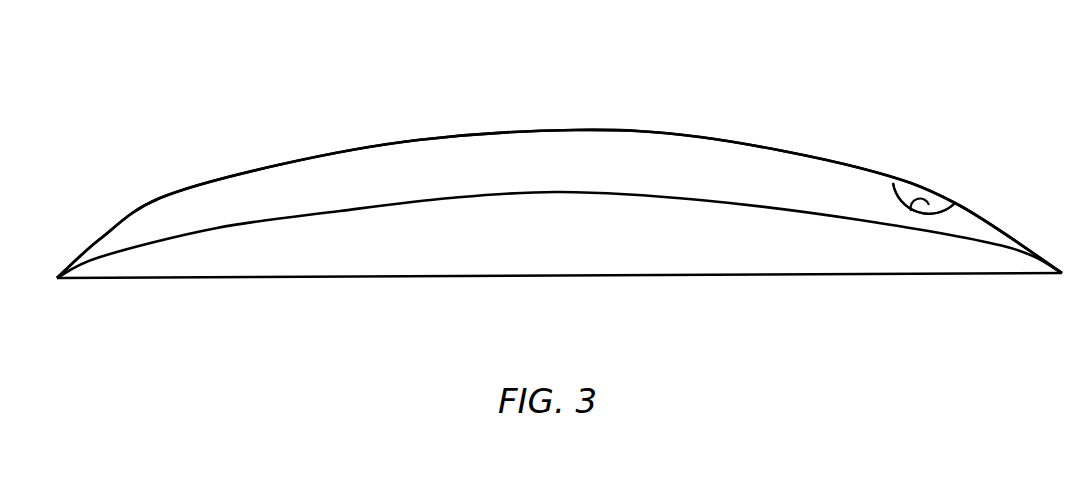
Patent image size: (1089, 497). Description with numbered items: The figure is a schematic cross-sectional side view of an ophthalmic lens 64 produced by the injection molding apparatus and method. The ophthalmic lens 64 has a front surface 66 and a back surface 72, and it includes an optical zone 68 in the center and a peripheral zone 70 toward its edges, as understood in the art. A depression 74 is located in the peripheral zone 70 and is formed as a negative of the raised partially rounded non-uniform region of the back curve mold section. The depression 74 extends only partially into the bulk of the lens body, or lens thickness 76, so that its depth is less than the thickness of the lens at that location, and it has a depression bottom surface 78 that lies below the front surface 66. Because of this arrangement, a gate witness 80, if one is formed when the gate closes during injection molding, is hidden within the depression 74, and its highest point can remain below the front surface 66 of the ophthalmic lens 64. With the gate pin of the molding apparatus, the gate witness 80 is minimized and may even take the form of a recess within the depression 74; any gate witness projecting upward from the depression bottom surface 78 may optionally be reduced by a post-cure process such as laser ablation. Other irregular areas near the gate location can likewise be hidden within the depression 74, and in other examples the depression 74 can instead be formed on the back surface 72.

The ophthalmic lens 64 is at (497, 121).
The front surface 66 is at (278, 165).
The optical zone 68 is at (418, 140).
The peripheral zone 70 is at (983, 213).
The back surface 72 is at (217, 230).
The depression 74 is at (907, 181).
The lens thickness 76 is at (697, 170).
The depression bottom surface 78 is at (918, 212).
The gate witness 80 is at (928, 201).